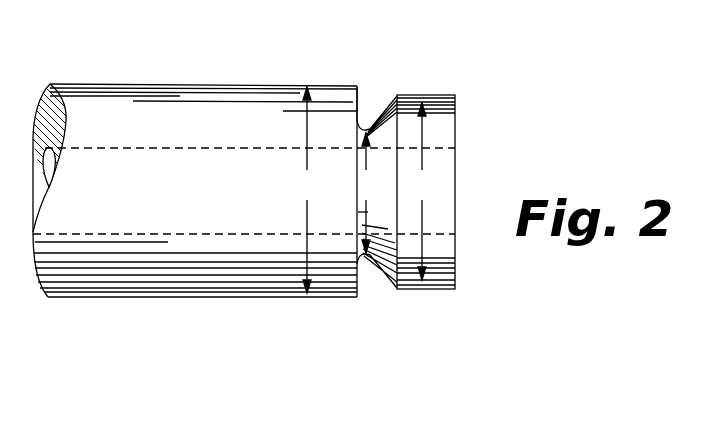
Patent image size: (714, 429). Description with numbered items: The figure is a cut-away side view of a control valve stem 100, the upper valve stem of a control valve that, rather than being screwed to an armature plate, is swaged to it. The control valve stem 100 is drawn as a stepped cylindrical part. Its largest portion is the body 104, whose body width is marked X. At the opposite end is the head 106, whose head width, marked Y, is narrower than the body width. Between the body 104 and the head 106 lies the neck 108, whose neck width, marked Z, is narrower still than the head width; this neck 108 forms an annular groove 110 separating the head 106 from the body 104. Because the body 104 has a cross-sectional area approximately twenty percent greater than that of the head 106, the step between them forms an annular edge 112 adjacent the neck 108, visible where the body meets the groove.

The control valve stem 100 is at (138, 298).
The body 104 is at (277, 297).
The head 106 is at (447, 123).
The neck 108 is at (363, 258).
The annular groove 110 is at (370, 262).
The annular edge 112 is at (364, 97).